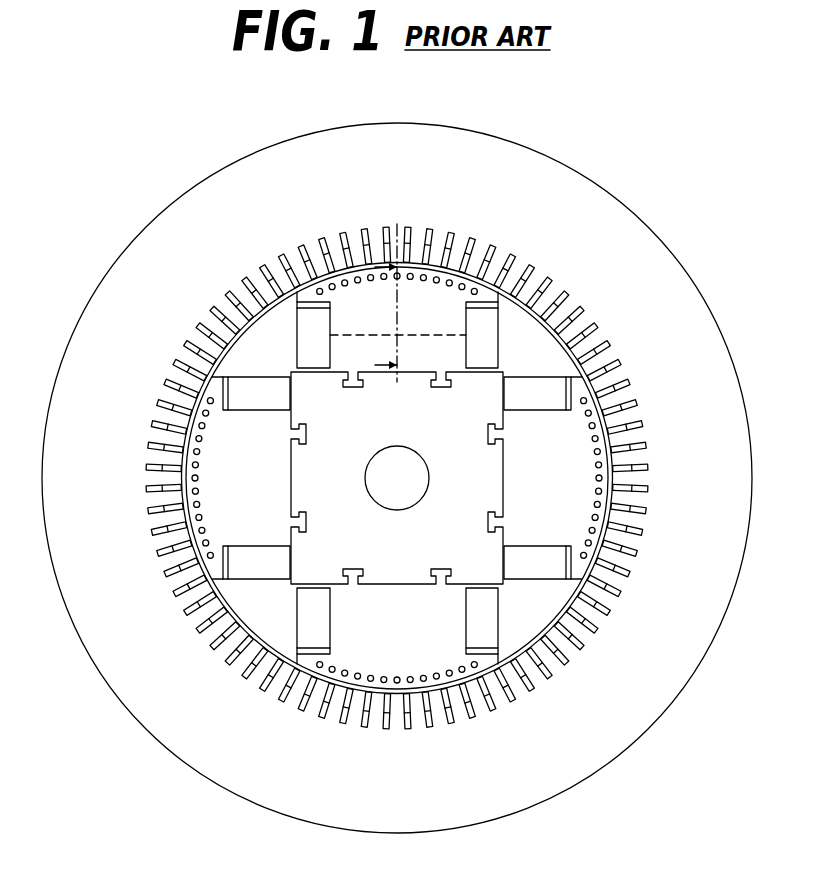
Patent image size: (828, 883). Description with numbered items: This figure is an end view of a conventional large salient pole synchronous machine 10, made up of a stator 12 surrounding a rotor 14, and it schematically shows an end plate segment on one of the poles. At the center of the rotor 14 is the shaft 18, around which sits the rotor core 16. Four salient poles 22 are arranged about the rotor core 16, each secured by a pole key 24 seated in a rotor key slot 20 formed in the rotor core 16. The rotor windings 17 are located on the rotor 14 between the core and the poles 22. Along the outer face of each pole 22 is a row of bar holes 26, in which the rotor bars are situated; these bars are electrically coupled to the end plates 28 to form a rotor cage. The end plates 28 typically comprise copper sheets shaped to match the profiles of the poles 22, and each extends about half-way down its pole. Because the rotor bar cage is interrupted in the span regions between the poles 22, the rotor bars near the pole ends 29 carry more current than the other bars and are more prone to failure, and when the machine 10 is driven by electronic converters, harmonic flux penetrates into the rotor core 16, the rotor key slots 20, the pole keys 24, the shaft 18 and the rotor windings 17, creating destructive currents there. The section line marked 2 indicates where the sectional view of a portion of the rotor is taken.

The salient pole synchronous machine 10 is at (124, 188).
The stator 12 is at (416, 176).
The rotor 14 is at (270, 336).
The rotor core 16 is at (412, 434).
The rotor windings 17 is at (327, 352).
The shaft 18 is at (412, 492).
The rotor key slots 20 is at (448, 388).
The poles 22 is at (440, 364).
The pole keys 24 is at (441, 388).
The bar holes 26 is at (594, 450).
The end plates 28 is at (411, 329).
The pole ends 29 is at (506, 304).
The section line 2- 2 is at (398, 300).